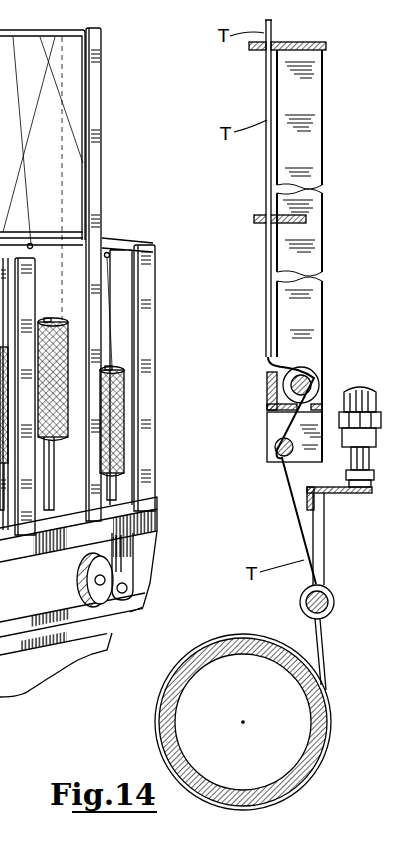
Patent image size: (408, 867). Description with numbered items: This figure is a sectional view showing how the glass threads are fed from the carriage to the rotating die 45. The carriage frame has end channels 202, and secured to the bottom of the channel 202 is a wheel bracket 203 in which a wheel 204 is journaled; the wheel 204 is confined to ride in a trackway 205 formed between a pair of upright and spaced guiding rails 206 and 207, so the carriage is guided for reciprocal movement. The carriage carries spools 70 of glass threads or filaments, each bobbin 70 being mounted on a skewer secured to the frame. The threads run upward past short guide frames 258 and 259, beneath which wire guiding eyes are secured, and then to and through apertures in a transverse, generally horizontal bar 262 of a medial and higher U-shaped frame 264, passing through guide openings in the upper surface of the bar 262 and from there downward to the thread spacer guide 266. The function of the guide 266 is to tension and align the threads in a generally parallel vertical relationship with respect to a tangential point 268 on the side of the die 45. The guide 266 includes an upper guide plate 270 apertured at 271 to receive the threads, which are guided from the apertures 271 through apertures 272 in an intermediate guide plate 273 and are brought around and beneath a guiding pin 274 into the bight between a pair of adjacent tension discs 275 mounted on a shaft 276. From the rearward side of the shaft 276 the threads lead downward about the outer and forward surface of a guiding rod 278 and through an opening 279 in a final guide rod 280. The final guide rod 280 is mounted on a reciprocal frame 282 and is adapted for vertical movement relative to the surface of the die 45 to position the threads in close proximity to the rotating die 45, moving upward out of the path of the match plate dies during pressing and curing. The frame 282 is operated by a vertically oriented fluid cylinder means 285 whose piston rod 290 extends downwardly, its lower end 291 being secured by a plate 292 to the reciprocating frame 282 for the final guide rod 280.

The transverse bar 262 is at (68, 30).
The U-shaped frame 264 is at (97, 139).
The short guide frame 258 is at (33, 273).
The short guide frame 259 is at (118, 245).
The spool 70 is at (119, 400).
The end channel 202 is at (10, 600).
The wheel bracket 203 is at (131, 560).
The wheel 204 is at (110, 600).
The trackway 205 is at (56, 665).
The guiding rail 206 is at (25, 623).
The guiding rail 207 is at (65, 630).
The upper guide plate 270 is at (314, 44).
The aperture 271 is at (266, 55).
The aperture 272 is at (267, 222).
The thread spacer guide 266 is at (306, 137).
The intermediate guide plate 273 is at (301, 218).
The guiding pin 274 is at (276, 358).
The tension disc 275 is at (301, 367).
The shaft 276 is at (304, 412).
The guiding rod 278 is at (276, 443).
The fluid cylinder means 285 is at (356, 392).
The piston rod 290 is at (354, 453).
The lower end of piston rod 291 is at (371, 467).
The bracket 292 is at (356, 490).
The reciprocal frame 282 is at (331, 559).
The opening 279 is at (334, 587).
The final guide rod 280 is at (332, 612).
The tangential point 268 is at (323, 697).
The rotating die 45 is at (330, 750).